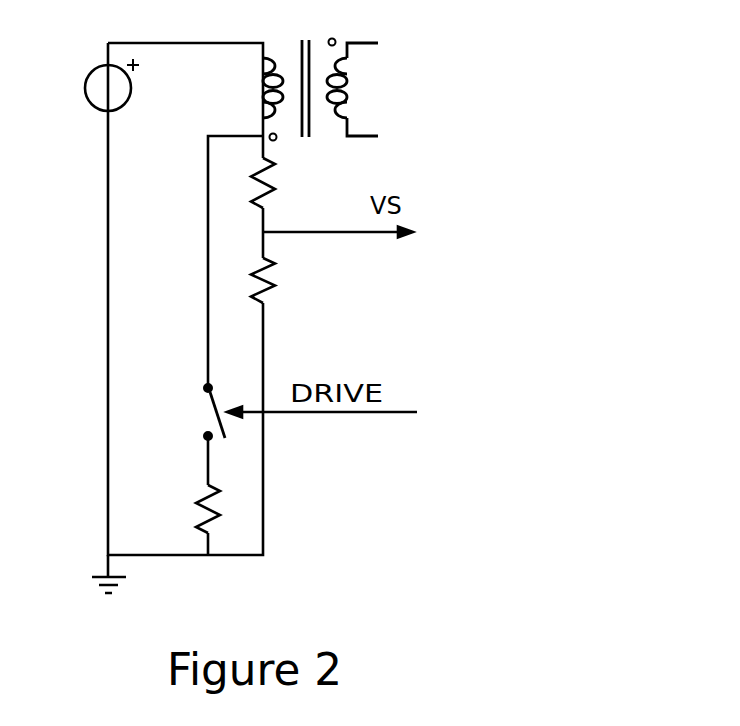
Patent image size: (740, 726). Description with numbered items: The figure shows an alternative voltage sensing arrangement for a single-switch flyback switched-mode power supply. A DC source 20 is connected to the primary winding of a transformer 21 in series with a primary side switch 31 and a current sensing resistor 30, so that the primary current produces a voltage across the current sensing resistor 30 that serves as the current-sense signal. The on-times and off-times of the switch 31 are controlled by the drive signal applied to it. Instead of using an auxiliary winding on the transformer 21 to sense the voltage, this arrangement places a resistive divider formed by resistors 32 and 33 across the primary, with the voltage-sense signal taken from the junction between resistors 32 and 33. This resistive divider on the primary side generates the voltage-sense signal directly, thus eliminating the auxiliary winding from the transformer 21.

The DC source 20 is at (93, 85).
The transformer 21 is at (320, 77).
The current sensing resistor 30 is at (226, 509).
The primary side switch 31 is at (198, 412).
The resistor 32 is at (281, 183).
The resistor 33 is at (281, 280).